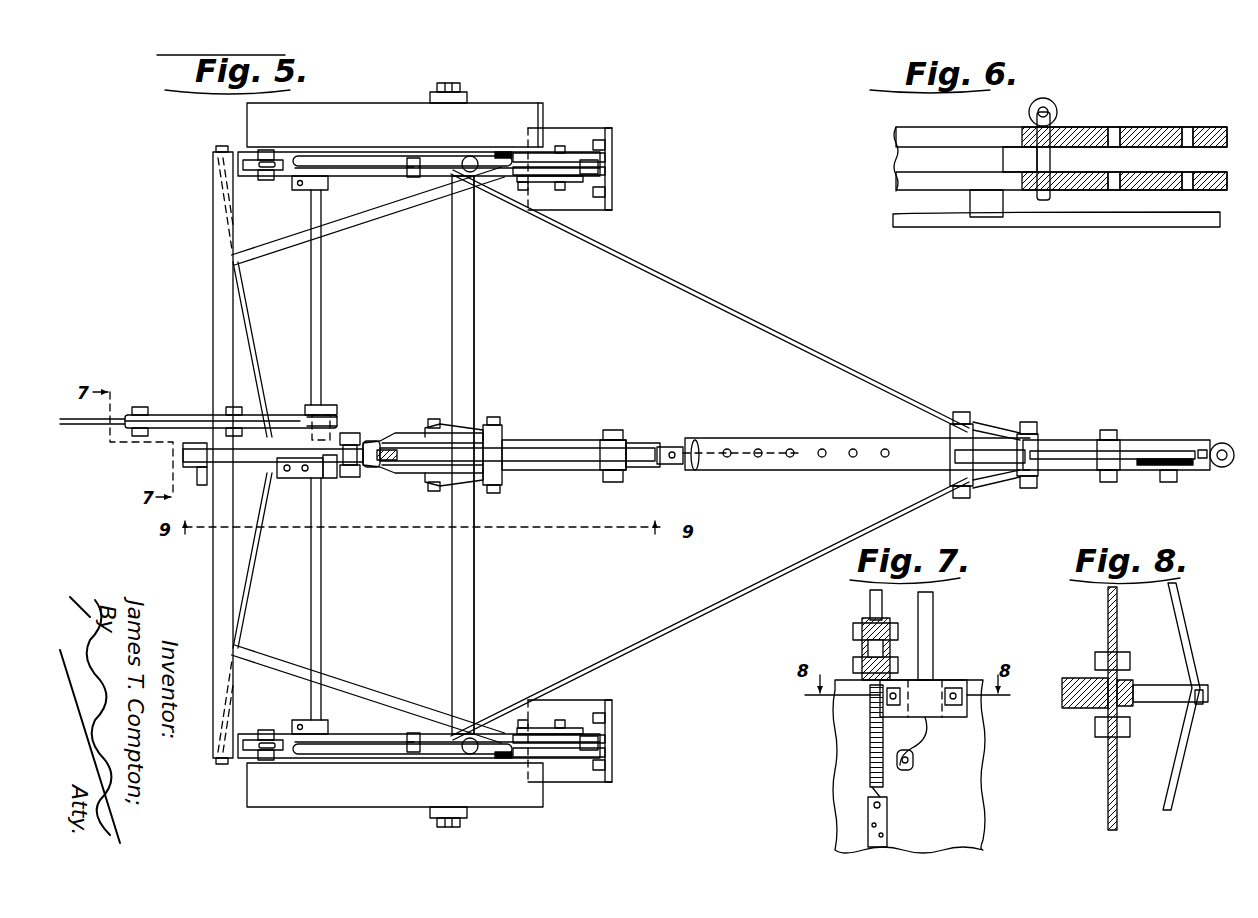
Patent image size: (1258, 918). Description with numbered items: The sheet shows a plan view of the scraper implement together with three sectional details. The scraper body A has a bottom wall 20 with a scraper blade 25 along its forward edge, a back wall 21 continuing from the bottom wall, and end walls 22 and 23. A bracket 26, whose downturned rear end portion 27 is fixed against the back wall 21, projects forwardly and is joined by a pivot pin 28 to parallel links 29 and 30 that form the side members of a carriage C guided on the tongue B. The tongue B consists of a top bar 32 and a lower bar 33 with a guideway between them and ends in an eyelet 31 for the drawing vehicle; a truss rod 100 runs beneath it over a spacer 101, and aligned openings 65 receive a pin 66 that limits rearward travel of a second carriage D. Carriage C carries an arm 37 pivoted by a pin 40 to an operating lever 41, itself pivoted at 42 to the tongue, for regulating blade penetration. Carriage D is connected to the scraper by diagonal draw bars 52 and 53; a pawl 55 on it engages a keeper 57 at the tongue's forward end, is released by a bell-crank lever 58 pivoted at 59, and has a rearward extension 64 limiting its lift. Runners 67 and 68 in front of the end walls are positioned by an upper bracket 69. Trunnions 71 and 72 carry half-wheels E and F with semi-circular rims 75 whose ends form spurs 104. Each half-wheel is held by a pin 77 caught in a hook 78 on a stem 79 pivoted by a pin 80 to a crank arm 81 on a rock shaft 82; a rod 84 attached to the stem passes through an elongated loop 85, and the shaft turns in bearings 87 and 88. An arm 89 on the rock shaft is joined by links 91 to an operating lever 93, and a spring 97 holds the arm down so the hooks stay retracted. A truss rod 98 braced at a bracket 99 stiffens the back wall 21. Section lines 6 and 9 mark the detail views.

In FIG. 5, the section line 6 is at (688, 472).
In FIG. 5, the section line 9 is at (668, 447).
In FIG. 5, the bottom wall 20 is at (475, 338).
In FIG. 5, the back wall 21 is at (213, 305).
In FIG. 7, the back wall 21 is at (835, 800).
In FIG. 8, the back wall 21 is at (1108, 605).
In FIG. 5, the end wall 22 is at (565, 150).
In FIG. 5, the end wall 23 is at (560, 760).
In FIG. 5, the scraper blade 25 is at (476, 362).
In FIG. 5, the bracket 26 is at (333, 462).
In FIG. 7, the bracket 26 is at (933, 627).
In FIG. 8, the bracket 26 is at (1062, 705).
In FIG. 7, the downturned rear end portion 27 is at (918, 744).
In FIG. 5, the pivot pin 28 is at (352, 478).
In FIG. 5, the link 29 is at (400, 433).
In FIG. 5, the link 30 is at (400, 473).
In FIG. 5, the eyelet 31 is at (1222, 443).
In FIG. 6, the top bar 32 is at (897, 130).
In FIG. 6, the lower bar 33 is at (896, 180).
In FIG. 5, the arm 37 is at (560, 470).
In FIG. 5, the pivot pin 40 is at (610, 431).
In FIG. 5, the operating lever 41 is at (535, 447).
In FIG. 5, the pivot 42 is at (640, 443).
In FIG. 5, the draw bar 52 is at (727, 312).
In FIG. 5, the draw bar 53 is at (730, 597).
In FIG. 5, the pawl 55 is at (1145, 451).
In FIG. 5, the keeper 57 is at (1100, 440).
In FIG. 5, the bell-crank lever 58 is at (1110, 482).
In FIG. 5, the pivot 59 is at (1175, 482).
In FIG. 5, the rearward extension 64 is at (955, 452).
In FIG. 5, the openings 65 is at (788, 448).
In FIG. 6, the openings 65 is at (1185, 127).
In FIG. 5, the pin 66 is at (700, 442).
In FIG. 6, the pin 66 is at (1070, 127).
In FIG. 5, the runner 67 is at (613, 185).
In FIG. 5, the runner 68 is at (613, 722).
In FIG. 5, the bracket 69 is at (600, 165).
In FIG. 5, the trunnion 71 is at (428, 94).
In FIG. 5, the trunnion 72 is at (430, 814).
In FIG. 5, the semi-circular rim 75 is at (490, 102).
In FIG. 5, the pin 77 is at (470, 156).
In FIG. 5, the hook 78 is at (501, 152).
In FIG. 5, the stem 79 is at (360, 156).
In FIG. 5, the pin 80 is at (265, 180).
In FIG. 5, the crank arm 81 is at (270, 180).
In FIG. 5, the rock shaft 82 is at (322, 306).
In FIG. 5, the rod 84 is at (395, 176).
In FIG. 5, the elongated loop 85 is at (412, 158).
In FIG. 5, the bearing 87 is at (328, 182).
In FIG. 5, the bearing 88 is at (328, 726).
In FIG. 7, the arm 89 is at (868, 652).
In FIG. 5, the links 91 is at (172, 415).
In FIG. 7, the links 91 is at (862, 625).
In FIG. 5, the operating lever 93 is at (100, 425).
In FIG. 7, the operating lever 93 is at (868, 596).
In FIG. 7, the spring 97 is at (868, 745).
In FIG. 5, the truss rod 98 is at (255, 362).
In FIG. 8, the truss rod 98 is at (1185, 645).
In FIG. 8, the bracket 99 is at (1196, 708).
In FIG. 6, the truss rod 100 is at (1115, 227).
In FIG. 6, the spacer 101 is at (995, 215).
In FIG. 5, the spurs 104 is at (540, 103).
In FIG. 5, the scraper body A is at (492, 289).
In FIG. 5, the tongue B is at (848, 436).
In FIG. 5, the carriage C is at (414, 433).
In FIG. 5, the carriage D is at (995, 420).
In FIG. 5, the half-wheel E is at (244, 122).
In FIG. 5, the half-wheel F is at (244, 800).